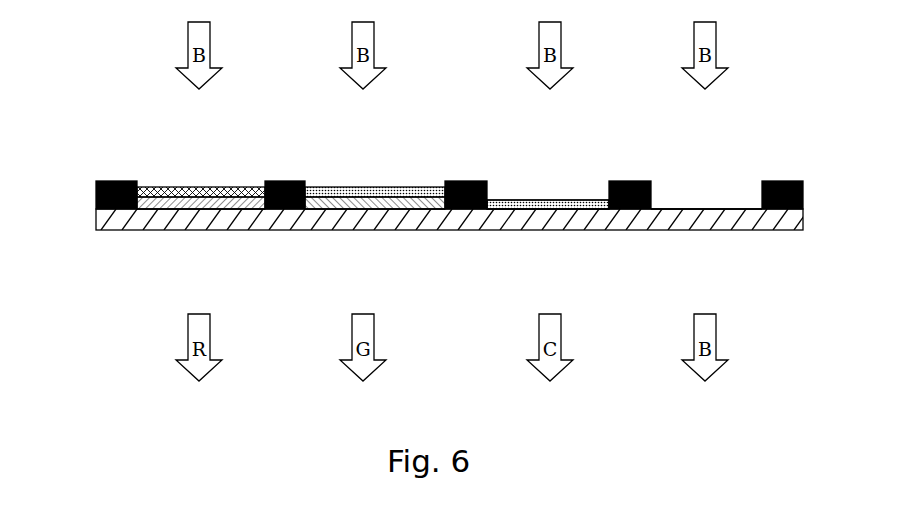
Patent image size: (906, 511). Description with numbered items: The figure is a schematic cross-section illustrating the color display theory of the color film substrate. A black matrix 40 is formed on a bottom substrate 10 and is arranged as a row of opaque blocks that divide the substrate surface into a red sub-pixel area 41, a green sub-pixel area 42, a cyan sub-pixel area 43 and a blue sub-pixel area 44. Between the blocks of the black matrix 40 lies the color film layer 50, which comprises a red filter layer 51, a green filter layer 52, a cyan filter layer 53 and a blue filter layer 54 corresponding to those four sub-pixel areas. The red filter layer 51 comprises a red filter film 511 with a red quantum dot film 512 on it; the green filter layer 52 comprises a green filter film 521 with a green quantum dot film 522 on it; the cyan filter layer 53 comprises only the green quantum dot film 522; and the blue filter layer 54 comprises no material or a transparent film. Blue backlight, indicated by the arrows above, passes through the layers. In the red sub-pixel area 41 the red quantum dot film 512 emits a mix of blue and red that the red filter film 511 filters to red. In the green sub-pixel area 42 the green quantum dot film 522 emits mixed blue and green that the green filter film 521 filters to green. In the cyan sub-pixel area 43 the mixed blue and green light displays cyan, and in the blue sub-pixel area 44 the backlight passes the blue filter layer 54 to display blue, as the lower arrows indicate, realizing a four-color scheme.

The bottom substrate 10 is at (115, 225).
The black matrix 40 is at (96, 185).
The red sub-pixel areas 41 is at (197, 212).
The green sub-pixel areas 42 is at (366, 212).
The cyan sub-pixel areas 43 is at (545, 212).
The blue sub-pixel areas 44 is at (711, 212).
The color film layer 50 is at (429, 154).
The red filter layer 51 is at (201, 159).
The red filter film 511 is at (180, 200).
The red quantum dot film 512 is at (158, 136).
The green filter layer 52 is at (457, 159).
The green filter film 521 is at (408, 136).
The green quantum dot film 522 is at (388, 194).
The cyan filter layer 53 is at (575, 136).
The blue filter layer 54 is at (712, 197).